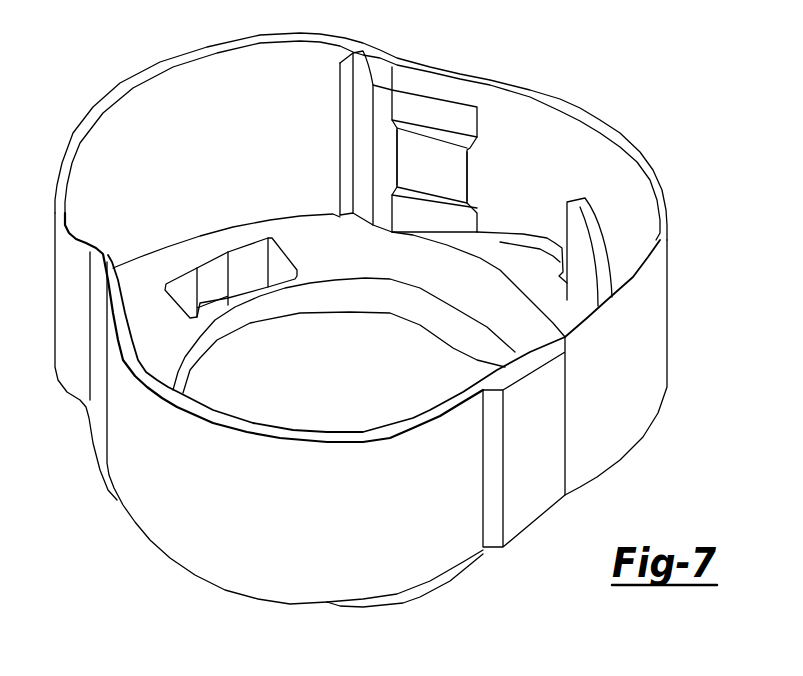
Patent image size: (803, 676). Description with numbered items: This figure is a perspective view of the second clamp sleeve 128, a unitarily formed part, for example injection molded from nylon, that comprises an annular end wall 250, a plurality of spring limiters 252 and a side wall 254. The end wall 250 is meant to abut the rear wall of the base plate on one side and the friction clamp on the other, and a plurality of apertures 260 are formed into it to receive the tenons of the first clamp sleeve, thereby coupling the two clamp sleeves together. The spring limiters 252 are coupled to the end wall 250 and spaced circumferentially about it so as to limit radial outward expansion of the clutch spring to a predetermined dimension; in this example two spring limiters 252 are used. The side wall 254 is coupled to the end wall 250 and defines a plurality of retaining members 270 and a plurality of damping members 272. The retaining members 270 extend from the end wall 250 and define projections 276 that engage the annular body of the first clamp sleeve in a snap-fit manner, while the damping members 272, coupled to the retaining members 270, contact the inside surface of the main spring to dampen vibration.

The second clamp sleeve 128 is at (556, 84).
The damping members 272 is at (112, 102).
The retaining members 270 is at (412, 150).
The projections 276 is at (443, 163).
The annular end wall 250 is at (303, 240).
The apertures 260 is at (217, 280).
The spring limiters 252 is at (583, 250).
The side wall 254 is at (543, 446).